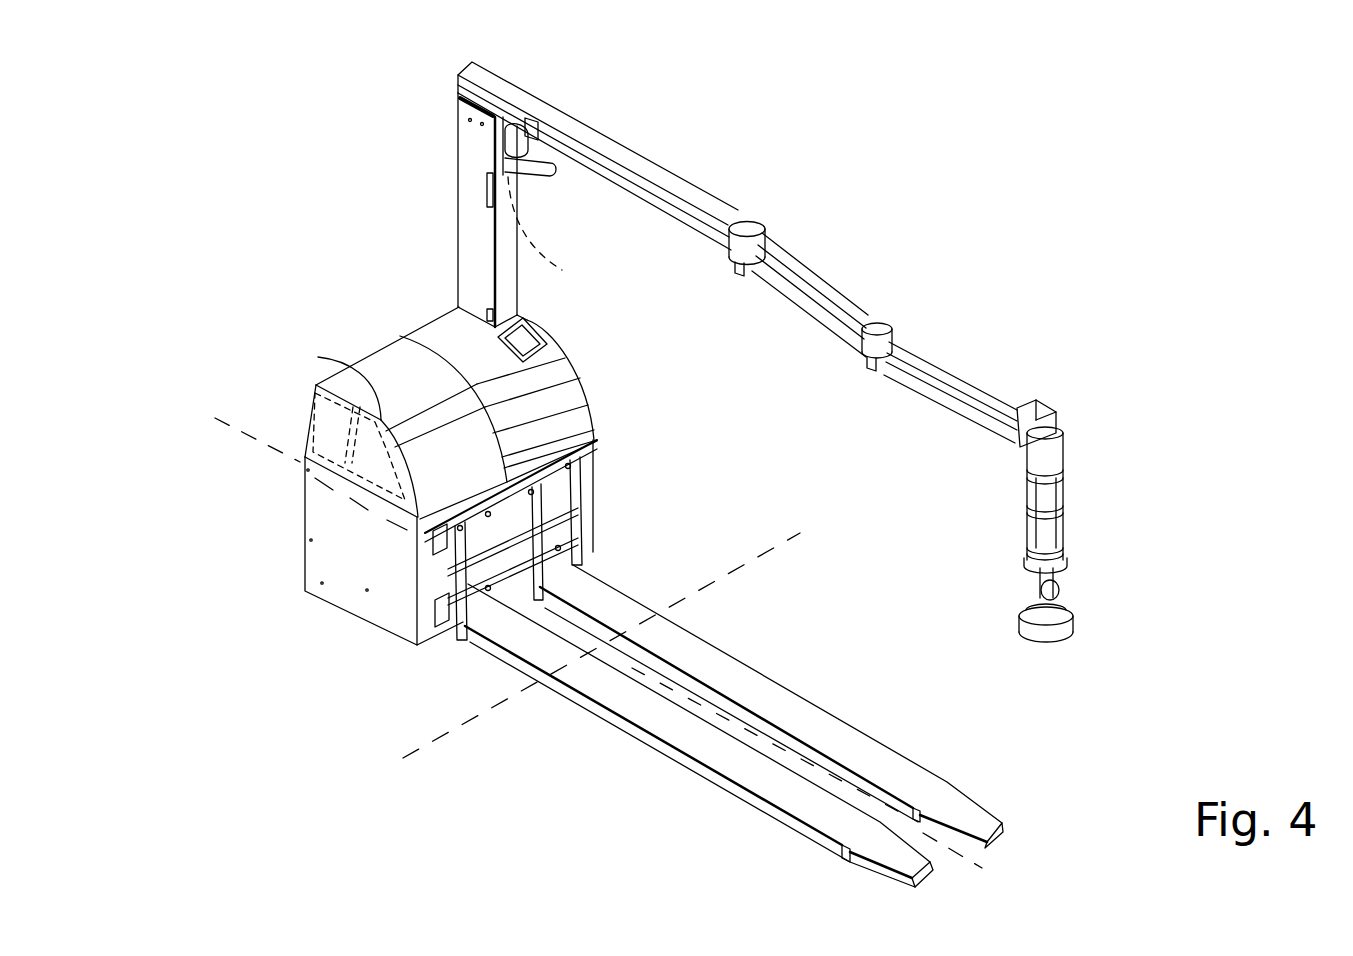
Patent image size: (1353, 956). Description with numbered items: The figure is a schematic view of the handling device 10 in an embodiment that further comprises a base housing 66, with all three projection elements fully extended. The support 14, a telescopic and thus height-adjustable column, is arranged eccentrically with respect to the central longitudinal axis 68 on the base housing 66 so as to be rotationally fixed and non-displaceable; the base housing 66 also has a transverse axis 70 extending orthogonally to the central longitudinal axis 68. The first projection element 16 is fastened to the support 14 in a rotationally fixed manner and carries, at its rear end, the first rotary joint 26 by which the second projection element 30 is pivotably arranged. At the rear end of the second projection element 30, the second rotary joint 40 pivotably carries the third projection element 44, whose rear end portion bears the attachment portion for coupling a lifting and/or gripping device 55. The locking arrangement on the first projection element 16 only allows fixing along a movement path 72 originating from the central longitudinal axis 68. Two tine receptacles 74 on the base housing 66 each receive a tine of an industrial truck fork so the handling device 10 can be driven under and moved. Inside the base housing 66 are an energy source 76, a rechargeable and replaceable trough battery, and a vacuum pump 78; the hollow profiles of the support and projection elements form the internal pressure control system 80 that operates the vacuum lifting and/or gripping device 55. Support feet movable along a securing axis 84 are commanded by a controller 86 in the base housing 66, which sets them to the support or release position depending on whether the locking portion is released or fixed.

The handling device 10 is at (177, 95).
The support 14 is at (478, 143).
The first projection element 16 is at (680, 178).
The first rotary joint 26 is at (752, 230).
The second projection element 30 is at (820, 291).
The second rotary joint 40 is at (880, 328).
The third projection element 44 is at (962, 400).
The lifting and/or gripping device 55 is at (1044, 531).
The base housing 66 is at (398, 360).
The central longitudinal axis 68 is at (998, 878).
The transverse axis 70 is at (762, 560).
The movement path 72 is at (527, 237).
The tine receptacles 74 is at (808, 802).
The energy source 76 is at (320, 358).
The vacuum pump 78 is at (335, 423).
The internal pressure control system 80 is at (478, 246).
The securing axis 84 is at (313, 593).
The controller 86 is at (545, 333).